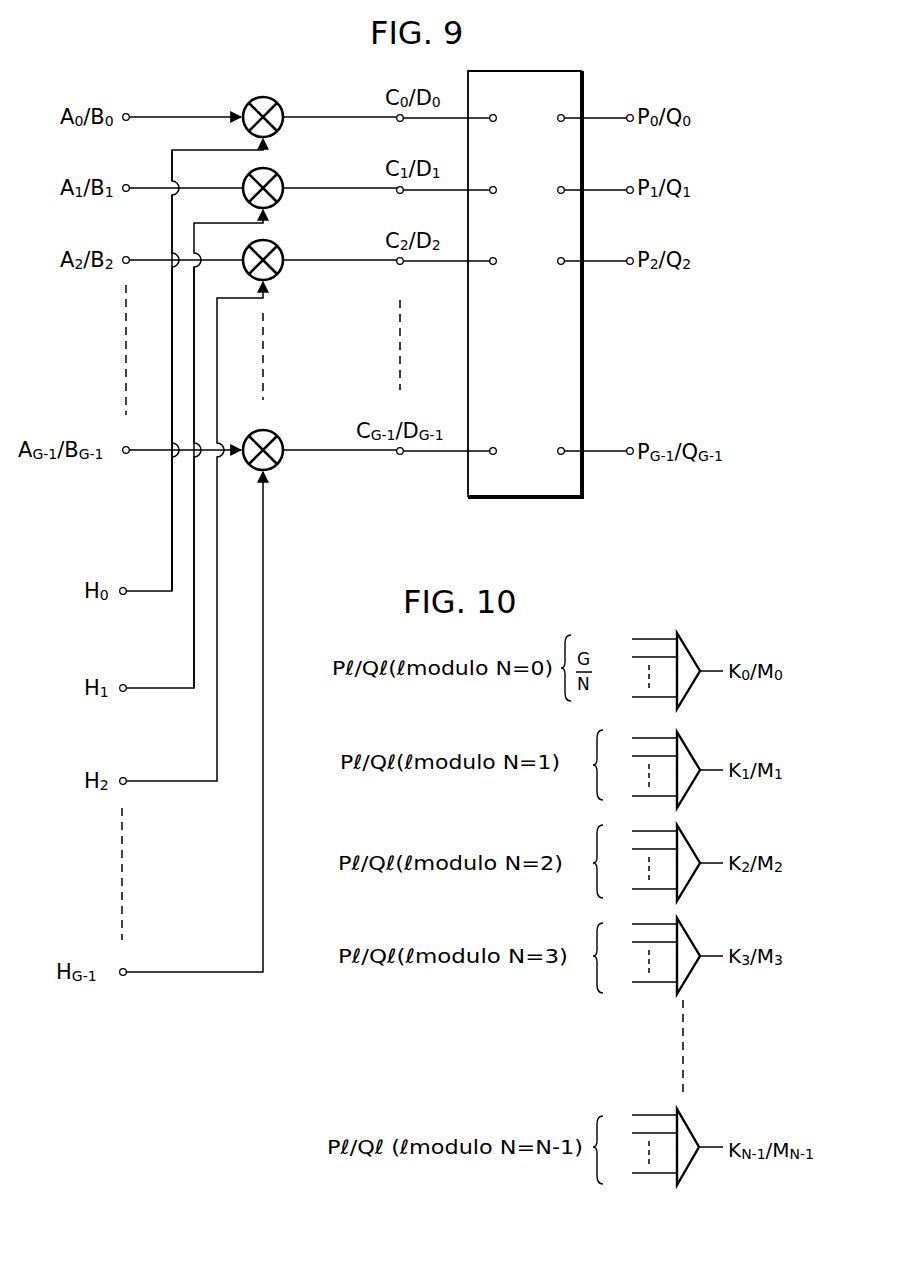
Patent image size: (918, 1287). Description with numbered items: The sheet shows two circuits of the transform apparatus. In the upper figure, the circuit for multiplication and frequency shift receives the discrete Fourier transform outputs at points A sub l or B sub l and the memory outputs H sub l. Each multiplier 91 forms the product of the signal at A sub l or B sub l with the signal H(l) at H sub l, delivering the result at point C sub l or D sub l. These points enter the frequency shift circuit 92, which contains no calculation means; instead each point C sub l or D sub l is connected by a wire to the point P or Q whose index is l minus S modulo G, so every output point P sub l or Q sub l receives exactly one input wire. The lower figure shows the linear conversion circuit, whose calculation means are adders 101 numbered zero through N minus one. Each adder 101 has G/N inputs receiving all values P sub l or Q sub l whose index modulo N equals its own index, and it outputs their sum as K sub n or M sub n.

In FIG. 9, the multiplier 91 is at (277, 104).
In FIG. 9, the frequency shift circuit 92 is at (531, 72).
In FIG. 10, the adder 101 is at (690, 650).